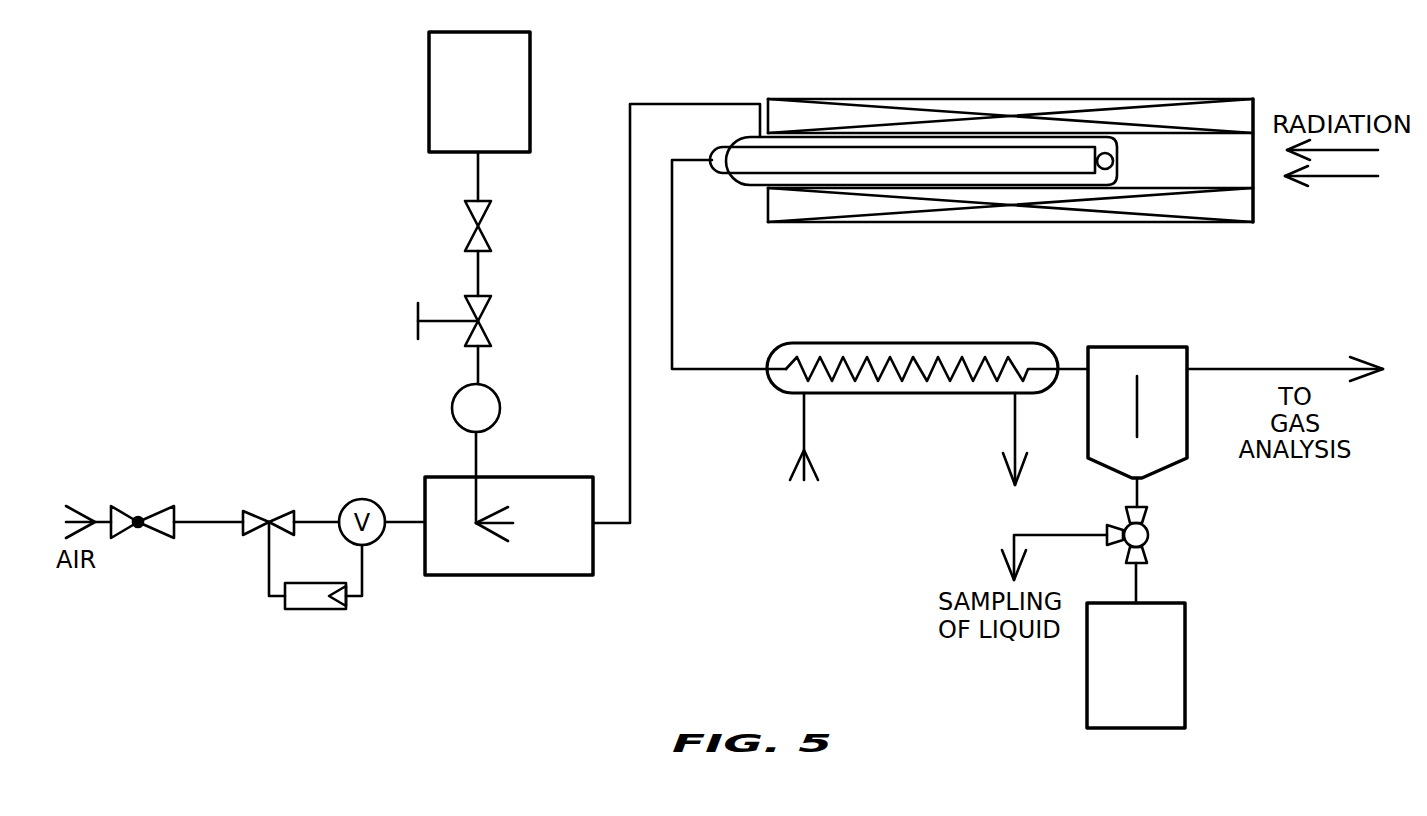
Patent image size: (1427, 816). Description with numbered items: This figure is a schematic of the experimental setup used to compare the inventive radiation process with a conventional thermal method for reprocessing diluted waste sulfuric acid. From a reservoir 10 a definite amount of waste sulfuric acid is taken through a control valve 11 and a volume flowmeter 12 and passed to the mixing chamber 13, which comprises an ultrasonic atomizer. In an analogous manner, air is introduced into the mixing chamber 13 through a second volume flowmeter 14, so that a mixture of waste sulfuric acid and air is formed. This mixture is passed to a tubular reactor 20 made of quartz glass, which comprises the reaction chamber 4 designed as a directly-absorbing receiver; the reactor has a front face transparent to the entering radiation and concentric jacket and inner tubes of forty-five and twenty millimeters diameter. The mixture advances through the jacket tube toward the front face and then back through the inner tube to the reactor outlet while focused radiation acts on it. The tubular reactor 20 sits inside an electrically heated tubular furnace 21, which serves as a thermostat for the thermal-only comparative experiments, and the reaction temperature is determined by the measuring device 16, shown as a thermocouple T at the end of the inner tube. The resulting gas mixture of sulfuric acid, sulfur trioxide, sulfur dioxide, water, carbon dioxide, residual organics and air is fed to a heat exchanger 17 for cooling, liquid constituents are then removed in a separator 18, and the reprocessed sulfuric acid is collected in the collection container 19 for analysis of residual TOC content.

The reaction chamber 4 is at (868, 158).
The reservoir 10 is at (459, 97).
The control valve 11 is at (412, 321).
The volume flowmeter 12 is at (452, 400).
The mixing chamber 13 is at (535, 529).
The volume flowmeter 14 is at (300, 609).
The measuring device 16 is at (1105, 170).
The heat exchanger 17 is at (905, 343).
The separator 18 is at (1132, 347).
The collection container 19 is at (1117, 672).
The tubular reactor 20 is at (742, 182).
The tubular furnace 21 is at (978, 99).
The thermocouple tip T is at (1113, 157).